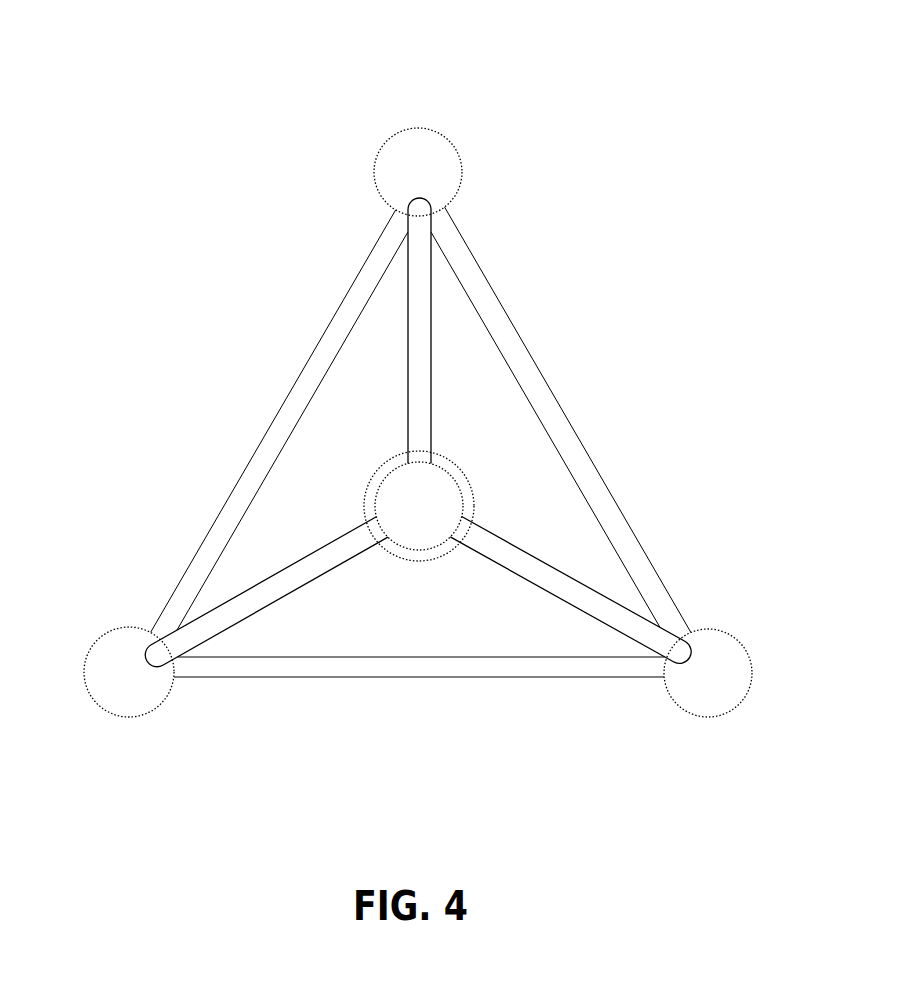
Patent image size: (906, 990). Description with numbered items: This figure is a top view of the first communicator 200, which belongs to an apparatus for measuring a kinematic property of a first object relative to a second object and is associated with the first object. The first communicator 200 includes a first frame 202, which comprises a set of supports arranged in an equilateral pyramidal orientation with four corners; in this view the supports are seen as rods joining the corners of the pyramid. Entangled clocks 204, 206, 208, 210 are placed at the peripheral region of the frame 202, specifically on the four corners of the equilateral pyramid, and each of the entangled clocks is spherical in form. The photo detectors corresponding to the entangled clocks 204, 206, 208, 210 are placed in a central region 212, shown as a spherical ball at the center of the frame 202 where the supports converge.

The first communicator 200 is at (522, 73).
The first frame 202 is at (498, 256).
The entangled clock 204 is at (69, 608).
The entangled clock 206 is at (348, 119).
The entangled clock 208 is at (772, 609).
The entangled clock 210 is at (464, 465).
The central region 212 is at (381, 578).